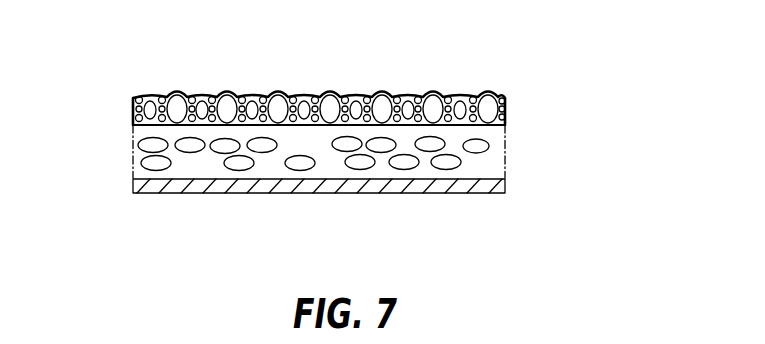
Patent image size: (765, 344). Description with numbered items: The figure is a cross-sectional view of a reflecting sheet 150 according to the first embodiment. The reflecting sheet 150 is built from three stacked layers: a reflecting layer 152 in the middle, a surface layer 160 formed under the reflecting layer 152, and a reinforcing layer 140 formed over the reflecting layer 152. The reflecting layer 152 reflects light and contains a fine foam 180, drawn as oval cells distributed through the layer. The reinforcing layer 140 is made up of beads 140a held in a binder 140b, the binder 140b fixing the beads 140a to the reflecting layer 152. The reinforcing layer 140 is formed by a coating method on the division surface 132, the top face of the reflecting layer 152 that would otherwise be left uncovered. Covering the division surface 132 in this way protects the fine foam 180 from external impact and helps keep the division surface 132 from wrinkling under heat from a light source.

The reinforcing layer 140 is at (297, 43).
The bead 140a is at (227, 93).
The binder 140b is at (298, 92).
The division surface 132 is at (133, 125).
The reflecting sheet 150 is at (540, 127).
The reflecting layer 152 is at (500, 156).
The surface layer 160 is at (192, 183).
The fine foam 180 is at (298, 165).